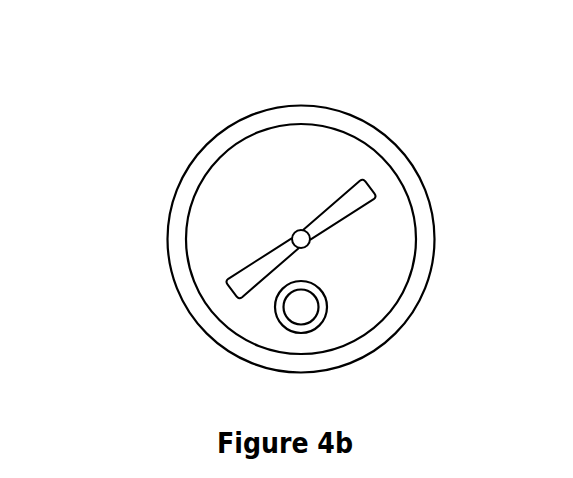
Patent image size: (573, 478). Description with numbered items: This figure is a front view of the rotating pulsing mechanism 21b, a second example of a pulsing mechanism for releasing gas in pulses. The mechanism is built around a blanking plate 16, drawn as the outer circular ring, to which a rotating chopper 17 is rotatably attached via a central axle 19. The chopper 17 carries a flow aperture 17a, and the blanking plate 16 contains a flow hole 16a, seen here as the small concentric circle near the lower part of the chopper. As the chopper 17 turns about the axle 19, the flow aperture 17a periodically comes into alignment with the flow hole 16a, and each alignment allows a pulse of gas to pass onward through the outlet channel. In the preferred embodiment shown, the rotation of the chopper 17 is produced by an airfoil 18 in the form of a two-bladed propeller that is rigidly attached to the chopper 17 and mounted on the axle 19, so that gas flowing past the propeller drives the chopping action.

The rotating pulsing mechanism 21b is at (183, 140).
The blanking plate 16 is at (375, 130).
The rotating chopper 17 is at (187, 242).
The flow aperture 17a is at (275, 305).
The airfoil 18 is at (245, 267).
The axle 19 is at (298, 230).
The flow hole 16a is at (327, 305).